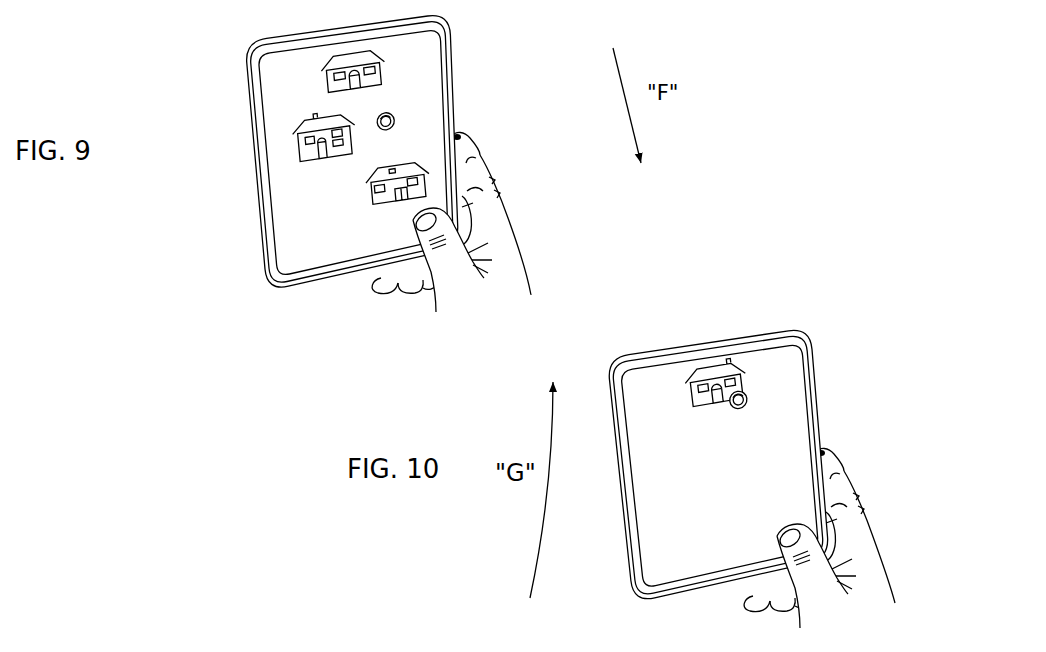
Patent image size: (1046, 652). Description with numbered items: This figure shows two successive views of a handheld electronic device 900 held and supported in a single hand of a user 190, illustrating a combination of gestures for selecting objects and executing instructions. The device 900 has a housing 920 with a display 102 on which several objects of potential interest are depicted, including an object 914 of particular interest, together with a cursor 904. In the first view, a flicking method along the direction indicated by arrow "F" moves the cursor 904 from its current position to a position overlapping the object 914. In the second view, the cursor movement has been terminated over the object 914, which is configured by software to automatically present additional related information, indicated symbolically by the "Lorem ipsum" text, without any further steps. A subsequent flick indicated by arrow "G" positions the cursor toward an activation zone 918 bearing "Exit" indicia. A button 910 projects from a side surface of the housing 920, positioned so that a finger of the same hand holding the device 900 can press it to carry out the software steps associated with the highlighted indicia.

In FIG. 9, the display 102 is at (293, 188).
In FIG. 10, the display 102 is at (790, 398).
In FIG. 9, the user 190 is at (393, 167).
In FIG. 10, the user 190 is at (735, 464).
In FIG. 9, the handheld electronic device 900 is at (522, 44).
In FIG. 10, the handheld electronic device 900 is at (826, 368).
In FIG. 9, the cursor 904 is at (366, 114).
In FIG. 10, the cursor 904 is at (756, 388).
In FIG. 9, the button 910 is at (453, 118).
In FIG. 9, the object 914 is at (385, 77).
In FIG. 10, the object 914 is at (690, 397).
In FIG. 9, the activation zone 918 is at (343, 233).
In FIG. 10, the activation zone 918 is at (705, 558).
In FIG. 9, the housing 920 is at (453, 103).